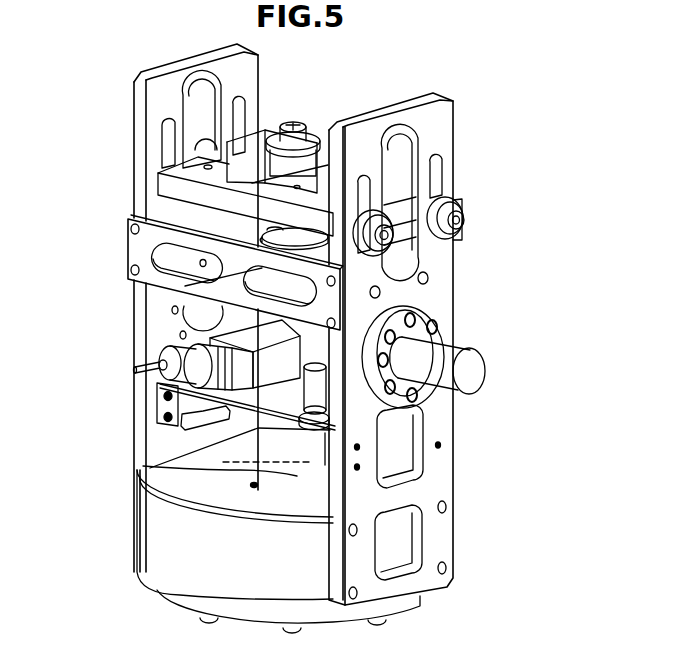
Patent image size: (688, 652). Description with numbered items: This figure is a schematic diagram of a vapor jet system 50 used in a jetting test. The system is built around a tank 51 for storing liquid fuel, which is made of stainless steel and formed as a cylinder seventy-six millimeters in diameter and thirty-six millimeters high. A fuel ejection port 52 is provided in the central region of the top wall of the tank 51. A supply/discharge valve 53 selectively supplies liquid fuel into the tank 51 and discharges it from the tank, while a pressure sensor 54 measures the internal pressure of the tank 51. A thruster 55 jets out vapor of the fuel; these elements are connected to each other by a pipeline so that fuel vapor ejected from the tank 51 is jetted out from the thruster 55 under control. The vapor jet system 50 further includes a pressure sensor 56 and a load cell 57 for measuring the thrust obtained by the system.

The vapor jet system 50 is at (488, 128).
The tank 51 is at (160, 557).
The fuel ejection port 52 is at (147, 486).
The supply/discharge valve 53 is at (328, 392).
The pressure sensor 54 is at (140, 366).
The thruster 55 is at (134, 218).
The pressure sensor 56 is at (140, 382).
The load cell 57 is at (270, 131).